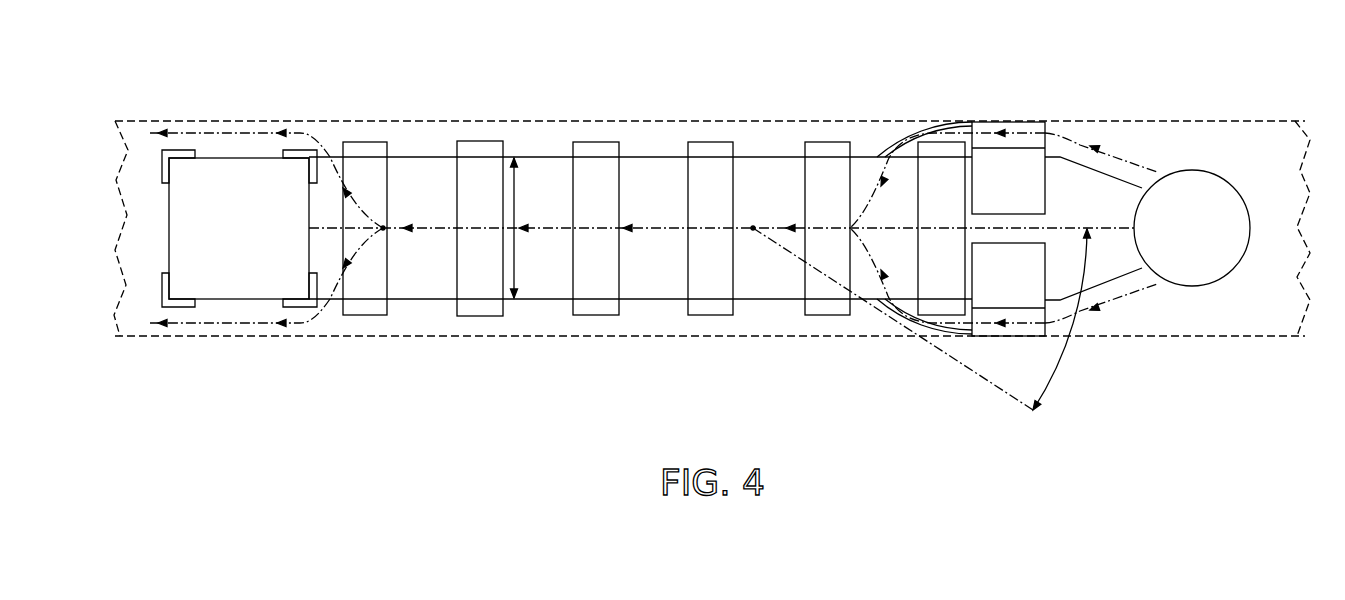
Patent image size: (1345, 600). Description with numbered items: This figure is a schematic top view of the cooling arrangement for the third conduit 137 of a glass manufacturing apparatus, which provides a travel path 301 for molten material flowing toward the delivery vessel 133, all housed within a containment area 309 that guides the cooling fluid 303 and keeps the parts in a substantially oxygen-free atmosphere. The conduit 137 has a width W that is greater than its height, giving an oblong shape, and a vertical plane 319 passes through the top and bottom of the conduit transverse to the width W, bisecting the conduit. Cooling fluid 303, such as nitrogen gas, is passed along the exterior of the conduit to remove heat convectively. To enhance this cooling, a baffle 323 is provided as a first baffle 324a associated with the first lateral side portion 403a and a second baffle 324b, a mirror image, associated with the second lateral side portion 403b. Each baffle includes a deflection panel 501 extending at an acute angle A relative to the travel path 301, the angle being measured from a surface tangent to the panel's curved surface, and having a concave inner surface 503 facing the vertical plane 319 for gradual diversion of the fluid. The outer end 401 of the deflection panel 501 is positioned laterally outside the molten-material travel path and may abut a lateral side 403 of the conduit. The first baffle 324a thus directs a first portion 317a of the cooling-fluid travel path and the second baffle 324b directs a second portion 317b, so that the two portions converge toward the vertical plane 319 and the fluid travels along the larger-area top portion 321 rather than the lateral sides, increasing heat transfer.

The delivery vessel 133 is at (1218, 155).
The third conduit 137 is at (763, 135).
The travel path 301 is at (647, 227).
The cooling fluid 303 is at (1227, 263).
The containment area 309 is at (1288, 120).
The first portion of the travel path of the cooling fluid 317a is at (947, 320).
The second portion of the travel path of the cooling fluid 317b is at (893, 143).
The vertical plane 319 is at (457, 227).
The top portion 321 is at (718, 152).
The baffle 323 is at (993, 249).
The first baffle 324a is at (985, 338).
The second baffle 324b is at (998, 122).
The outer end 401 is at (872, 303).
The lateral side 403 is at (640, 241).
The first lateral side portion 403a is at (533, 300).
The second lateral side portion 403b is at (533, 157).
The deflection panel 501 is at (940, 226).
The concave inner surface 503 is at (925, 318).
The width W is at (514, 202).
The angle A is at (1068, 348).